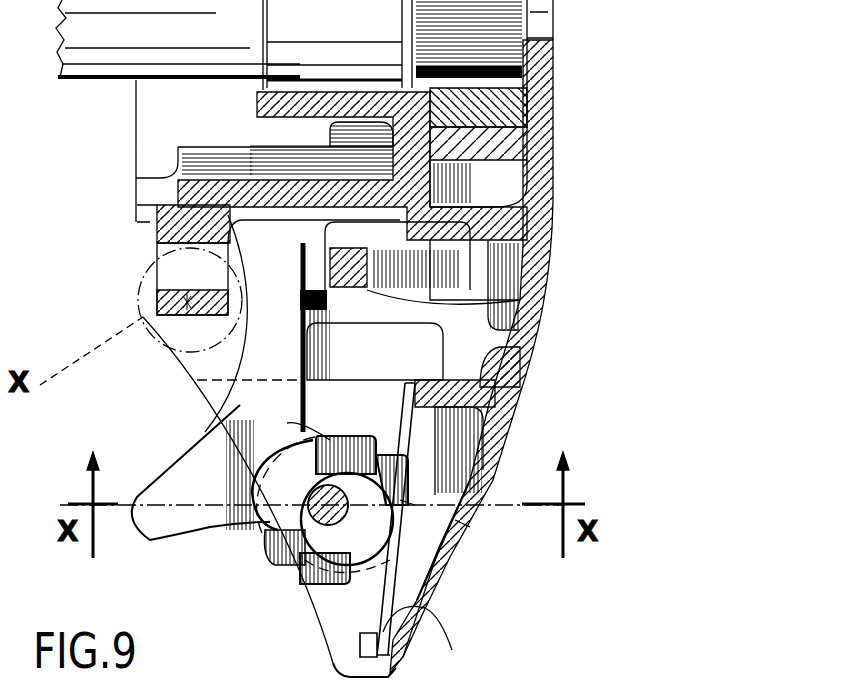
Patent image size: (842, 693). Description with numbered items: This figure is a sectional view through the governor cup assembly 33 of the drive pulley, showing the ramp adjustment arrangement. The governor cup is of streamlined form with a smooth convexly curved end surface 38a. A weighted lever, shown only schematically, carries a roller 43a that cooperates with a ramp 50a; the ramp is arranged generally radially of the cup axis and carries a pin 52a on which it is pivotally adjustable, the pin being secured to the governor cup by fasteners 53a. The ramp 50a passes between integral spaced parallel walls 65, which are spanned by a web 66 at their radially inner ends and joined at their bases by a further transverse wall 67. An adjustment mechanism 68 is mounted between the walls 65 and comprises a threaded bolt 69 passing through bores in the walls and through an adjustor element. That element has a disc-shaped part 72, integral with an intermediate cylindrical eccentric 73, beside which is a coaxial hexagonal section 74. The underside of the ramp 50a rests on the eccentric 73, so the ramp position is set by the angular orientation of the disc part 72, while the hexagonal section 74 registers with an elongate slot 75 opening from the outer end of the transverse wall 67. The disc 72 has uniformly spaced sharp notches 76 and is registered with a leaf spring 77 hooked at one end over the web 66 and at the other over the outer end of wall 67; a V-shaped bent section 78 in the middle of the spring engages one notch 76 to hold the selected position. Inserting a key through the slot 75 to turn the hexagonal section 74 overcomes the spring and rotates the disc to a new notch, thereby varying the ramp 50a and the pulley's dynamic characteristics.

The governor cup assembly 33 is at (547, 258).
The roller 43a is at (140, 293).
The fastener 53a is at (312, 282).
The pin 52a is at (518, 300).
The web 66 is at (523, 362).
The convexly curved end surface 38a is at (518, 404).
The cylindrical eccentric 73 is at (514, 445).
The hexagonal section 74 is at (400, 500).
The elongate slot 75 is at (468, 533).
The V-shaped bent section 78 is at (450, 562).
The transverse wall 67 is at (433, 587).
The leaf spring 77 is at (423, 615).
The spaced parallel walls 65 is at (333, 637).
The disc-shaped part 72 is at (300, 552).
The adjustment mechanism 68 is at (278, 569).
The threaded bolt 69 is at (268, 548).
The notches 76 is at (287, 423).
The ramp 50a is at (173, 483).